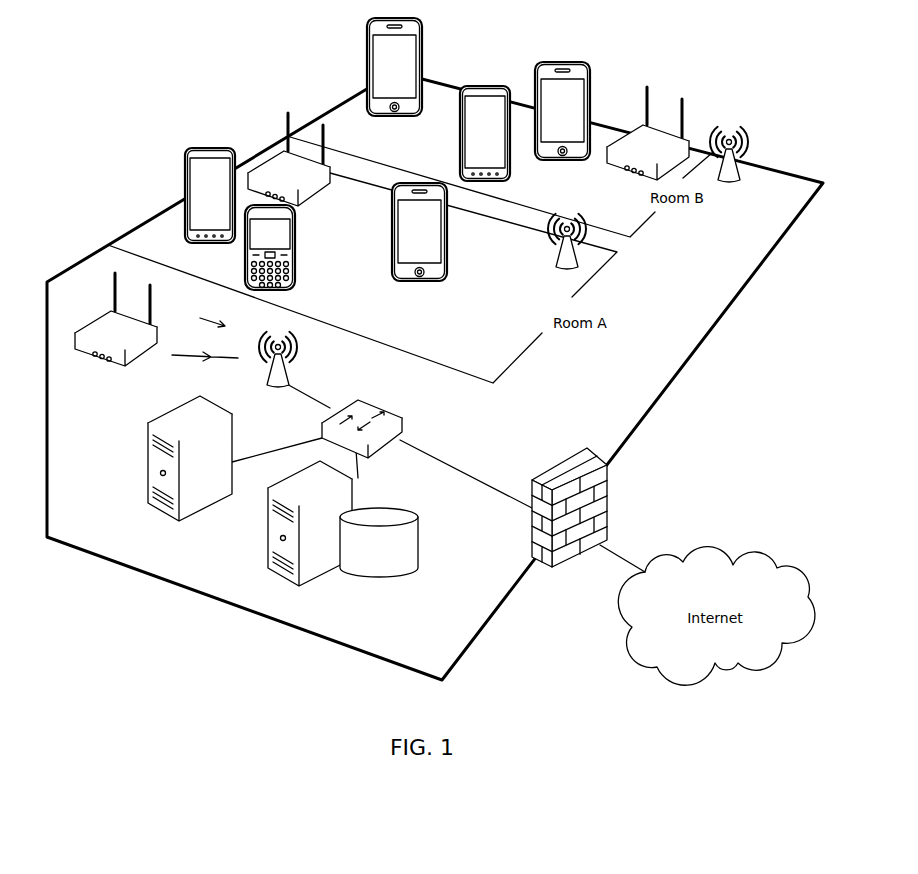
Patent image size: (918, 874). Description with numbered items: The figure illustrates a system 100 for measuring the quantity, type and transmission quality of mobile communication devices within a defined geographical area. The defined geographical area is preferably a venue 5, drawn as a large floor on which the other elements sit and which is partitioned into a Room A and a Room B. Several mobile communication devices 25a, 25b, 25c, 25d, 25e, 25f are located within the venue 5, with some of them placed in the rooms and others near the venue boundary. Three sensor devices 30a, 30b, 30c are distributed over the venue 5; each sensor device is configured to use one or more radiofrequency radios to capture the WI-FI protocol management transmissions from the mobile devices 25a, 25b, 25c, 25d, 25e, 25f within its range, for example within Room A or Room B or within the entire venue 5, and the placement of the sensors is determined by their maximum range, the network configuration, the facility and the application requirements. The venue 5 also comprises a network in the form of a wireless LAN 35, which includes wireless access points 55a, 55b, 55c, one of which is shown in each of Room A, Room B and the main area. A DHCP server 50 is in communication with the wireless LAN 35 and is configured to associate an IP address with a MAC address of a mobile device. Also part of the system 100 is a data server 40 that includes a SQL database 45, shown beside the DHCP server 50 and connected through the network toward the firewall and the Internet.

The system 100 is at (743, 76).
The venue 5 is at (658, 402).
The mobile communication device 25a is at (182, 219).
The mobile communication device 25b is at (245, 252).
The mobile communication device 25c is at (391, 270).
The mobile communication device 25d is at (366, 38).
The mobile communication device 25e is at (459, 123).
The mobile communication device 25f is at (534, 153).
The sensor device 30a is at (86, 324).
The sensor device 30b is at (318, 195).
The sensor device 30c is at (634, 125).
The wireless LAN 35 is at (205, 329).
The data server 40 is at (267, 550).
The SQL database 45 is at (419, 562).
The DHCP server 50 is at (147, 462).
The wireless access point 55a is at (267, 383).
The wireless access point 55b is at (556, 257).
The wireless access point 55c is at (743, 174).